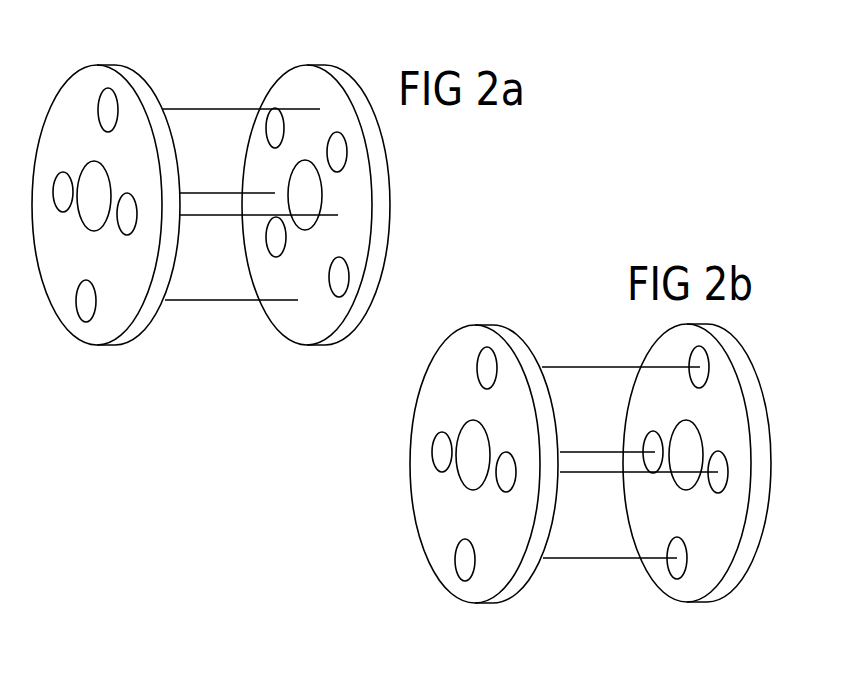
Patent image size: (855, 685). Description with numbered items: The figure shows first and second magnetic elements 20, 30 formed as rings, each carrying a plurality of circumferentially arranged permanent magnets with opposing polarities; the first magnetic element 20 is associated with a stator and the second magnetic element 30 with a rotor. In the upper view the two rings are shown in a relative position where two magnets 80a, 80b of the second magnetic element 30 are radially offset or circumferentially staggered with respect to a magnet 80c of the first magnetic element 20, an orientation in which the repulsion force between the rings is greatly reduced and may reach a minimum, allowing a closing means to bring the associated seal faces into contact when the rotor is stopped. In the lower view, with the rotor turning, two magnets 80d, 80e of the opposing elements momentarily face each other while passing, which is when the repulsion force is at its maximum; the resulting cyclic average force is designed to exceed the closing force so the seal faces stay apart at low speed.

In FIG. 2a, the first magnetic element 20 is at (97, 221).
In FIG. 2b, the first magnetic element 20 is at (451, 454).
In FIG. 2a, the second magnetic element 30 is at (351, 185).
In FIG. 2b, the second magnetic element 30 is at (699, 482).
In FIG. 2a, the magnet 80a is at (278, 128).
In FIG. 2a, the magnet 80b is at (337, 153).
In FIG. 2a, the magnet 80c is at (110, 108).
In FIG. 2b, the magnet 80d is at (487, 368).
In FIG. 2b, the magnet 80e is at (700, 358).